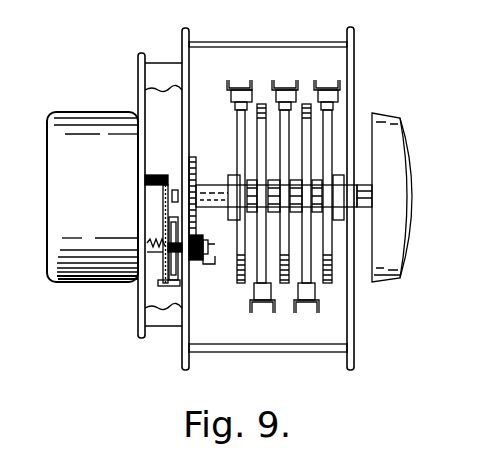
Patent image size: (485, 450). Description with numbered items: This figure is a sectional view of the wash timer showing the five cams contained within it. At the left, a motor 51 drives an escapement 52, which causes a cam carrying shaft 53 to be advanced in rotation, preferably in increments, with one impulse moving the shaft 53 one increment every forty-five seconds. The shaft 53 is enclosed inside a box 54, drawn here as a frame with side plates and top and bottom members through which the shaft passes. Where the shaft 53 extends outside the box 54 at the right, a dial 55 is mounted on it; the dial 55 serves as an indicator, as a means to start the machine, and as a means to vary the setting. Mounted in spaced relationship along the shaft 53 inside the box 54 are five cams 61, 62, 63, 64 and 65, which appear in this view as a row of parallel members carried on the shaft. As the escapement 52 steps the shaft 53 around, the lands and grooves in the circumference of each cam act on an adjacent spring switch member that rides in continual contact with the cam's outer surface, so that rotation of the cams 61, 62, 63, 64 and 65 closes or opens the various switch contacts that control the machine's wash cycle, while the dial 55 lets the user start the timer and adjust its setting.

The motor 51 is at (107, 278).
The escapement 52 is at (162, 315).
The cam carrying shaft 53 is at (207, 191).
The box 54 is at (273, 346).
The dial 55 is at (400, 150).
The cam 61 is at (240, 284).
The cam 62 is at (268, 104).
The cam 63 is at (287, 284).
The cam 64 is at (305, 104).
The cam 65 is at (327, 284).